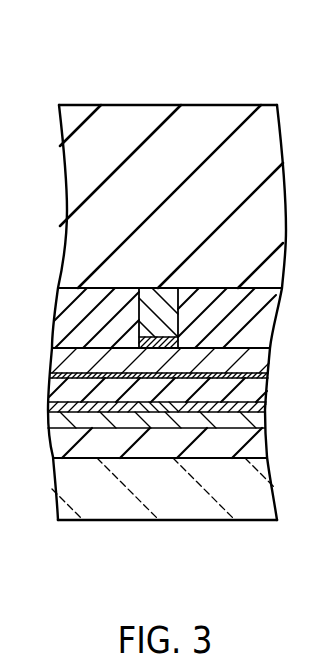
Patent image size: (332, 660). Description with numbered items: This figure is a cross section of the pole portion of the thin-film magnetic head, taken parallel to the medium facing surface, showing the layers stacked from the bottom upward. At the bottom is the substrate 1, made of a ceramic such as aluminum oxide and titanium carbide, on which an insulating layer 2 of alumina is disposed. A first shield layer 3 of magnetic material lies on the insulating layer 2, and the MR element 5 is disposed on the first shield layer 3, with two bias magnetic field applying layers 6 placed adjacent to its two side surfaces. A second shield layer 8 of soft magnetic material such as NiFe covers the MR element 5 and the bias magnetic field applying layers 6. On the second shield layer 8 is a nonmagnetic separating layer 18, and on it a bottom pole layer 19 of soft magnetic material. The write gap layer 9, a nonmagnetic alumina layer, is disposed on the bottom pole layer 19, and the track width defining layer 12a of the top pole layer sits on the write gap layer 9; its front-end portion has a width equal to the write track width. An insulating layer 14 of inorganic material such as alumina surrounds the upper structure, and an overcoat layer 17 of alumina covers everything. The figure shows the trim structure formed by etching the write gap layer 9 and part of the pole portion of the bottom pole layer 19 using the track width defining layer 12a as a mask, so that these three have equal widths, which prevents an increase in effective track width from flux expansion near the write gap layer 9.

The substrate 1 is at (104, 512).
The insulating layer 2 is at (120, 445).
The first shield layer 3 is at (143, 430).
The MR element 5 is at (195, 408).
The bias magnetic field applying layers 6 is at (242, 427).
The second shield layer 8 is at (242, 388).
The write gap layer 9 is at (180, 336).
The track width defining layer 12a is at (151, 297).
The insulating layer 14 is at (75, 308).
The overcoat layer 17 is at (226, 118).
The separating layer 18 is at (100, 372).
The bottom pole layer 19 is at (122, 372).